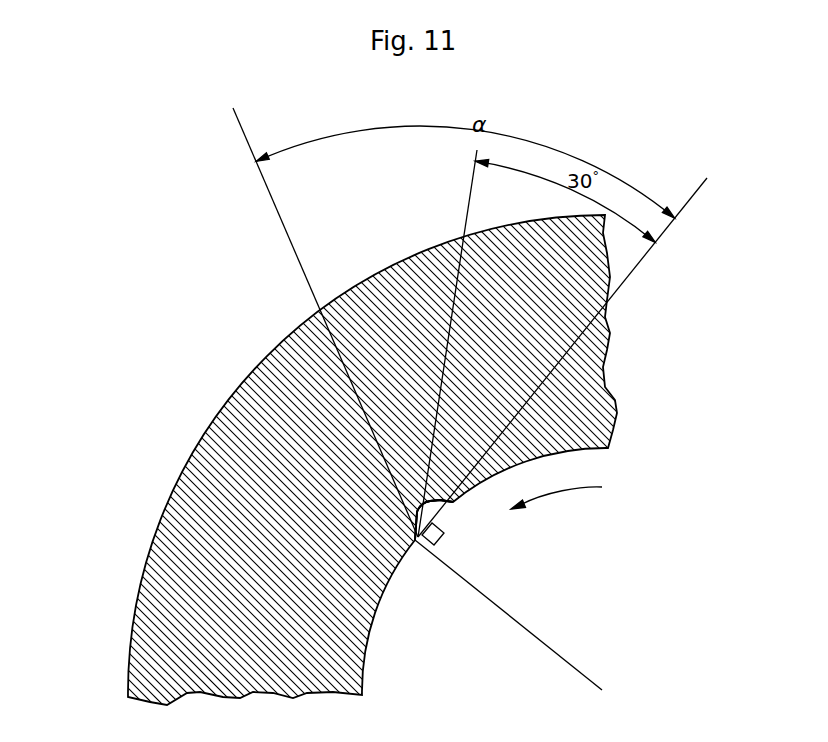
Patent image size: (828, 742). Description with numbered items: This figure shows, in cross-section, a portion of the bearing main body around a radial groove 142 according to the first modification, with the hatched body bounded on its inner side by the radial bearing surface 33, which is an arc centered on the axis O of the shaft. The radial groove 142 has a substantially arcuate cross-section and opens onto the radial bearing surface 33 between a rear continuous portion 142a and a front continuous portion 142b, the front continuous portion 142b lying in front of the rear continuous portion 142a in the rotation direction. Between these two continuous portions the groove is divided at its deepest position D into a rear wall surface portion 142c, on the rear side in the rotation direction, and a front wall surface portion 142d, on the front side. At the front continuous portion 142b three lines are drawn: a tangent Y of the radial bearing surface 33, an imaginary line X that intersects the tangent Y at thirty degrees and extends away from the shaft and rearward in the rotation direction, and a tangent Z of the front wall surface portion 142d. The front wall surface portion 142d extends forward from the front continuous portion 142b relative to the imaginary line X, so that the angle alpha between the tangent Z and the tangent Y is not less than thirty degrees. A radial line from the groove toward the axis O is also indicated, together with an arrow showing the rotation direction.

The radial bearing surface 33 is at (373, 642).
The radial groove 142 is at (443, 505).
The rear continuous portion 142a is at (451, 502).
The front continuous portion 142b is at (410, 550).
The rear wall surface portion 142c is at (440, 506).
The front wall surface portion 142d is at (413, 537).
The tangent of the front wall surface portion Z is at (365, 400).
The imaginary line X is at (430, 456).
The tangent of the radial bearing surface Y is at (513, 412).
The axis O is at (520, 629).
The deepest position D is at (437, 508).